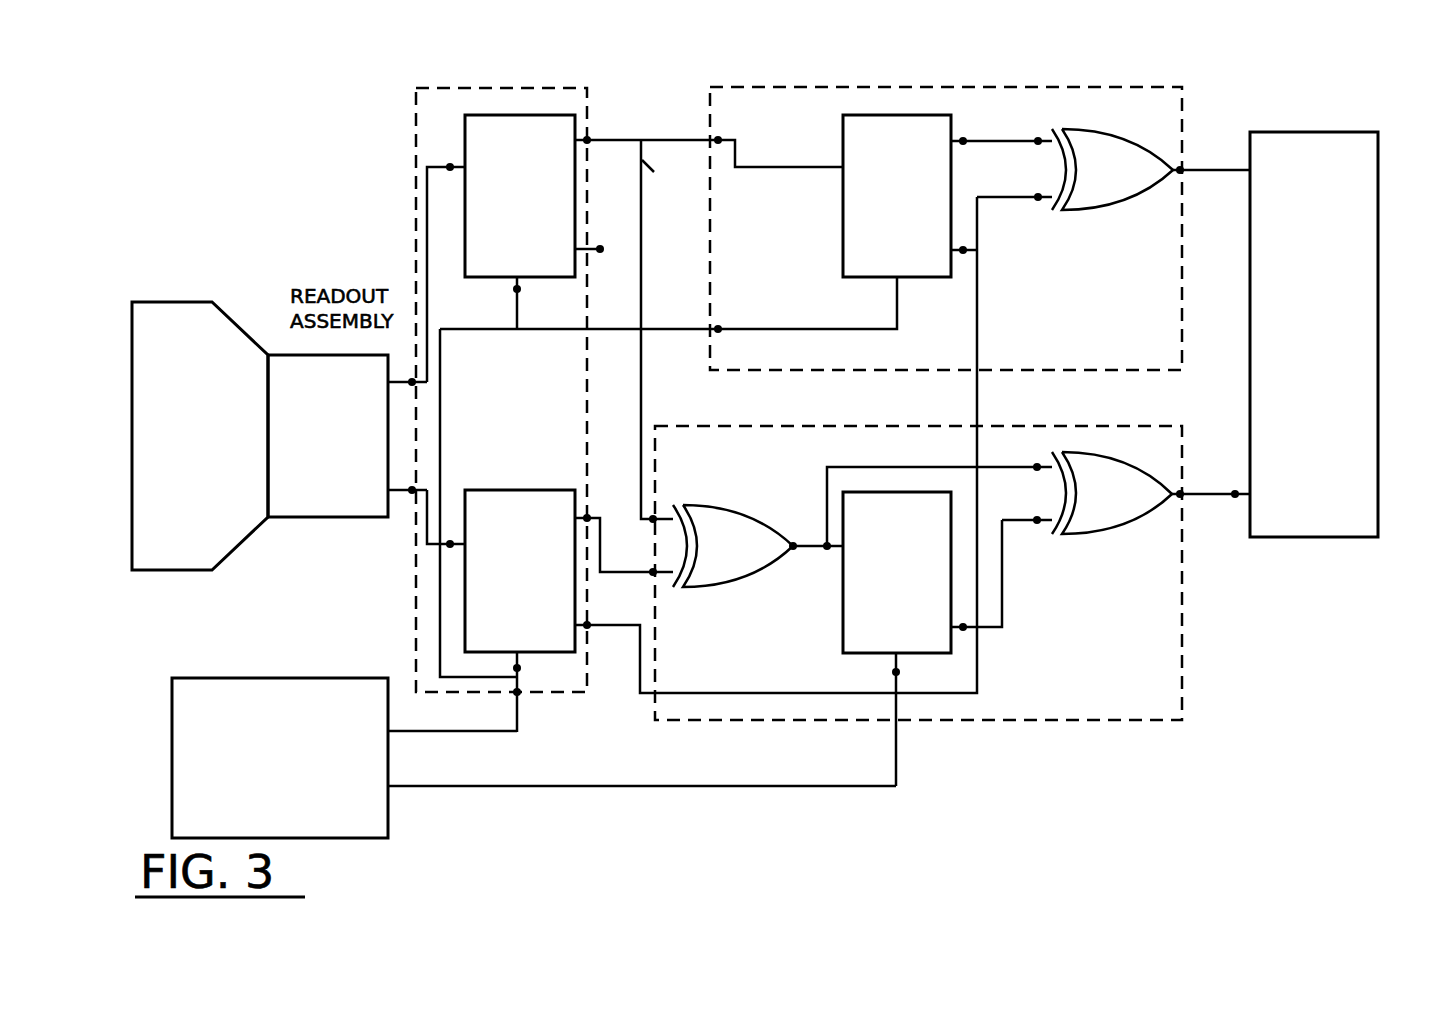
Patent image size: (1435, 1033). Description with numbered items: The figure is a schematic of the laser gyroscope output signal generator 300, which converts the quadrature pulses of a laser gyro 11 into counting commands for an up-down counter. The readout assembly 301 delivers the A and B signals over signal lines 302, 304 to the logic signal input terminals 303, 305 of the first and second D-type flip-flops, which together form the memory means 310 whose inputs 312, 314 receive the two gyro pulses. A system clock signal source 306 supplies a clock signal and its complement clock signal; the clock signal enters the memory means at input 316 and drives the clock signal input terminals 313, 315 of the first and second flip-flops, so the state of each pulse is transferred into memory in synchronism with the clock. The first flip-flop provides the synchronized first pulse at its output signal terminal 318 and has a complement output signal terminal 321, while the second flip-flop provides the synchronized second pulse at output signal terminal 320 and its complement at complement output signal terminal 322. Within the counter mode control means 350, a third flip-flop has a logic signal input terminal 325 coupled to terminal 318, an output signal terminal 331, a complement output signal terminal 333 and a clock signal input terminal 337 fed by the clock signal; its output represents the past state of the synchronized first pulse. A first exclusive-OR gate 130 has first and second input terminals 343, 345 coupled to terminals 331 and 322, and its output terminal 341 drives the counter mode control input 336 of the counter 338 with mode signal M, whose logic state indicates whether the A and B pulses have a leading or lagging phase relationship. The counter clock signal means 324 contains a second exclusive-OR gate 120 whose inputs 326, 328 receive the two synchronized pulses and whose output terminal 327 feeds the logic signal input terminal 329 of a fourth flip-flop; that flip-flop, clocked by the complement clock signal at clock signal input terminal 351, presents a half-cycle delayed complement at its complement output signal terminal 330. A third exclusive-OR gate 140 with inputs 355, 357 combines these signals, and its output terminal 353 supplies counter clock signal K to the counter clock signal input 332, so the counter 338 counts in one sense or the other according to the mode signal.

The laser gyro 11 is at (182, 478).
The readout assembly 301 is at (388, 513).
The signal line 302 is at (427, 229).
The logic signal input terminal 303 is at (447, 165).
The signal line 304 is at (427, 534).
The D input of second flip-flop 305 is at (450, 552).
The system clock signal source 306 is at (373, 832).
The memory means 310 is at (540, 424).
The memory means input 312 is at (422, 383).
The clock signal input terminal 313 is at (521, 290).
The memory means input 314 is at (416, 488).
The clock signal input terminal 315 is at (521, 670).
The clock signal input 316 is at (521, 696).
The output signal terminal 318 is at (588, 142).
The output signal terminal 320 is at (589, 522).
The complement output signal terminal 321 is at (604, 250).
The complement output signal terminal 322 is at (589, 629).
The counter clock signal means 324 is at (1130, 663).
The logic signal input terminal 325 is at (718, 138).
The first input terminal 326 is at (654, 514).
The output terminal 327 is at (796, 541).
The second input terminal 328 is at (655, 577).
The logic signal input terminal 329 is at (829, 551).
The complement output signal terminal 330 is at (967, 631).
The output signal terminal 331 is at (964, 146).
The counter clock signal input 332 is at (1238, 490).
The complement output signal terminal 333 is at (967, 252).
The counter mode control input 336 is at (1242, 176).
The clock signal input terminal 337 is at (720, 327).
The counter 338 is at (1334, 396).
The output terminal 341 is at (1179, 183).
The first input terminal 343 is at (1042, 137).
The second input terminal 345 is at (1036, 203).
The counter mode control means 350 is at (1125, 326).
The clock signal input terminal 351 is at (892, 673).
The output terminal 353 is at (1182, 500).
The first input terminal 355 is at (1036, 466).
The second input terminal 357 is at (1034, 525).
The second exclusive-OR gate 120 is at (733, 546).
The first exclusive-OR gate 130 is at (1112, 169).
The third exclusive-OR gate 140 is at (1112, 493).
The laser gyroscope output signal generator 300 is at (1228, 111).